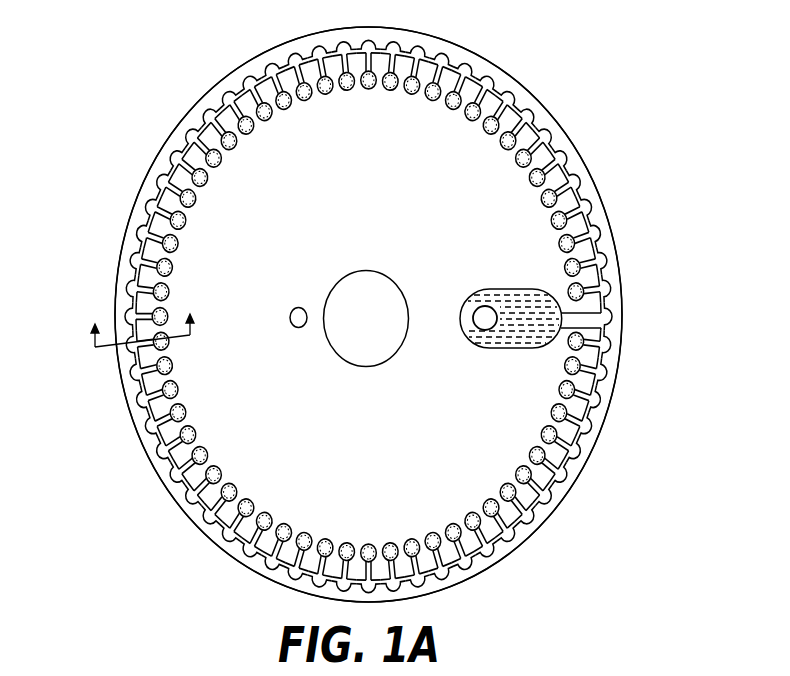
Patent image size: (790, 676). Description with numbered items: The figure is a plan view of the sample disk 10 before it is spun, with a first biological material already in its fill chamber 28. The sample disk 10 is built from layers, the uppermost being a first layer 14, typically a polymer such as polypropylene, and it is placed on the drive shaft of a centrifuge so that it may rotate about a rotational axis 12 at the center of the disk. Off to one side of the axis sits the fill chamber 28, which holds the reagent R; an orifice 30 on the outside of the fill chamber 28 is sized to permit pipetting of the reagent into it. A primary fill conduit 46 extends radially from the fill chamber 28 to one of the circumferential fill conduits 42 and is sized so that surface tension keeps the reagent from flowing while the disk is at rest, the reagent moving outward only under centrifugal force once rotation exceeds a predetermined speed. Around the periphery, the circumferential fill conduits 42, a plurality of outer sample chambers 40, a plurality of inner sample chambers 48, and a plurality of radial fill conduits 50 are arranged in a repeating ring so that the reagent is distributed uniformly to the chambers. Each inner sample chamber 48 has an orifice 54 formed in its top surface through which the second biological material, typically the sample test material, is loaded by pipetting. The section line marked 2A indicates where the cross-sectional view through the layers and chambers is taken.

The sample disk 10 is at (596, 143).
The rotational axis 12 is at (367, 319).
The first layer 14 is at (459, 143).
The fill chamber 28 is at (495, 351).
The orifice 30 is at (483, 319).
The outer sample chambers 40 is at (588, 207).
The circumferential fill conduits 42 is at (617, 248).
The primary fill conduit 46 is at (588, 321).
The inner sample chambers 48 is at (560, 219).
The radial fill conduits 50 is at (576, 197).
The orifice 54 is at (450, 538).
The section line 2A is at (141, 313).